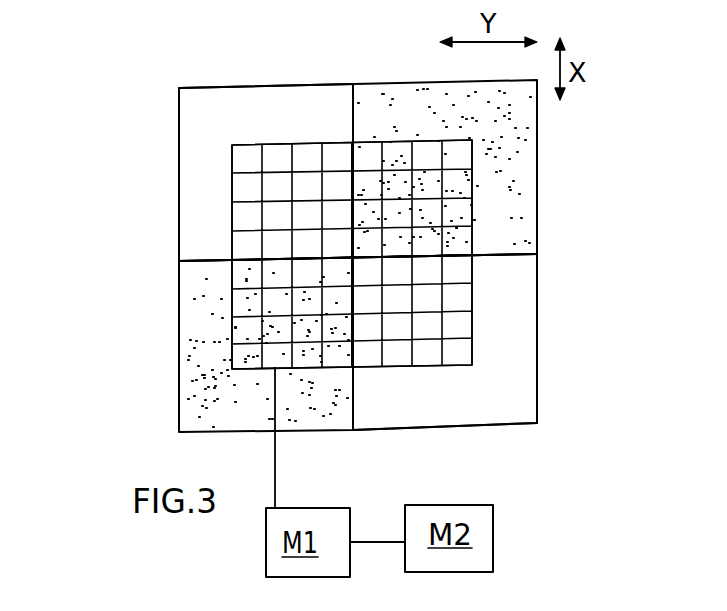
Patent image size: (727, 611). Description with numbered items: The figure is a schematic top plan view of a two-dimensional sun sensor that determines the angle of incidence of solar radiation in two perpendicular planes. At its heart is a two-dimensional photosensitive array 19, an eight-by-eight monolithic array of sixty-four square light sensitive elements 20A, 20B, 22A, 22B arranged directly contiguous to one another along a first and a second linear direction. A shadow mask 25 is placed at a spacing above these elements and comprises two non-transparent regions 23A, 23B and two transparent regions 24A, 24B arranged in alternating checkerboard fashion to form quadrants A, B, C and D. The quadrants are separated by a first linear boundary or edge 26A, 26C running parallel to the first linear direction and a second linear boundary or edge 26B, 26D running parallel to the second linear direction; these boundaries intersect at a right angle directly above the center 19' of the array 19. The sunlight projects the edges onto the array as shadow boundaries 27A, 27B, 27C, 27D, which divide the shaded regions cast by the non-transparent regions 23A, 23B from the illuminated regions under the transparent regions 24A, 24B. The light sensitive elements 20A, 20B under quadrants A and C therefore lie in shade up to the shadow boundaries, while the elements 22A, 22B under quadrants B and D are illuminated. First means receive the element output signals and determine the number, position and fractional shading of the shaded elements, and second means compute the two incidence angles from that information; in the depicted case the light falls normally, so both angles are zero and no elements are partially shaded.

The two-dimensional photosensitive array 19 is at (333, 254).
The center of the two-dimensional photosensitive array 19' is at (330, 225).
The light sensitive element 20A is at (462, 217).
The light sensitive element 20B is at (240, 300).
The light sensitive element 22A is at (460, 327).
The light sensitive element 22B is at (280, 158).
The non-transparent region 23A is at (520, 137).
The non-transparent region 23B is at (190, 380).
The transparent region 24A is at (518, 368).
The transparent region 24B is at (193, 116).
The shadow mask 25 is at (122, 225).
The first linear boundary or edge 26A is at (507, 257).
The shadow boundary 27A is at (507, 257).
The second linear boundary or edge 26B is at (353, 410).
The shadow boundary 27B is at (353, 410).
The first linear boundary or edge 26C is at (182, 261).
The shadow boundary 27C is at (182, 261).
The second linear boundary or edge 26D is at (352, 103).
The shadow boundary 27D is at (352, 103).